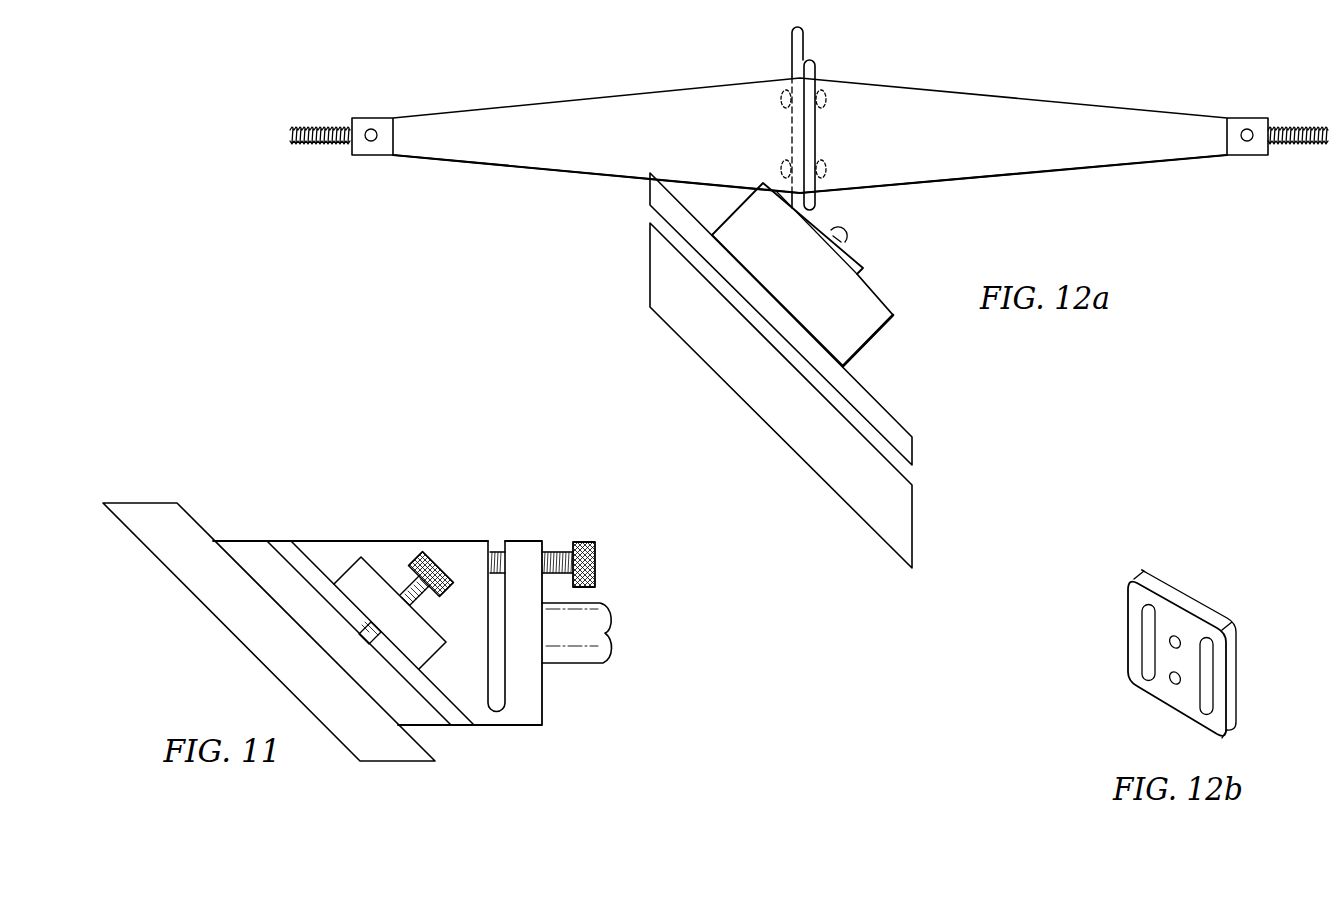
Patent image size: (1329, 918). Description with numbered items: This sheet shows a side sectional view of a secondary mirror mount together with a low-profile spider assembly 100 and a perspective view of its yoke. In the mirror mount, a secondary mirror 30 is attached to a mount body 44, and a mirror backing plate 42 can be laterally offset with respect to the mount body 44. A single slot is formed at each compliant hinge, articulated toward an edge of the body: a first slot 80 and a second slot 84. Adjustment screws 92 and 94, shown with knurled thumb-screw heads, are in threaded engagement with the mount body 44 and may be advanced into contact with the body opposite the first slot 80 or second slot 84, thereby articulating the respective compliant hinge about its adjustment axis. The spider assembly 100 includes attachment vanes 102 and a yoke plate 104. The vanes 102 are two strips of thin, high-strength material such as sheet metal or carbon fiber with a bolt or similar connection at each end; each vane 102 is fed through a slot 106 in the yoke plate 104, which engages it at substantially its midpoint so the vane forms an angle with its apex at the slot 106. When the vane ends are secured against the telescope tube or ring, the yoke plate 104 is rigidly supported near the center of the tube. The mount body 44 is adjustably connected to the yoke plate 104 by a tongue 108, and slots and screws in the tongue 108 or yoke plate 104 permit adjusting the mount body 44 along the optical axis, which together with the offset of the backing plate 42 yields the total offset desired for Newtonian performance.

In FIG. 12a, the secondary mirror 30 is at (915, 522).
In FIG. 11, the secondary mirror 30 is at (217, 618).
In FIG. 12a, the mirror backing plate 42 is at (892, 412).
In FIG. 12a, the mount body 44 is at (877, 293).
In FIG. 11, the first slot 80 is at (497, 673).
In FIG. 11, the second slot 84 is at (312, 573).
In FIG. 11, the adjustment screw 92 is at (586, 540).
In FIG. 11, the adjustment screw 94 is at (413, 553).
In FIG. 12a, the spider assembly 100 is at (1099, 62).
In FIG. 12a, the attachment vane 102 is at (1053, 157).
In FIG. 12a, the yoke plate 104 is at (815, 68).
In FIG. 12b, the yoke plate 104 is at (1183, 598).
In FIG. 12b, the slot 106 is at (1145, 648).
In FIG. 12a, the tongue 108 is at (792, 53).